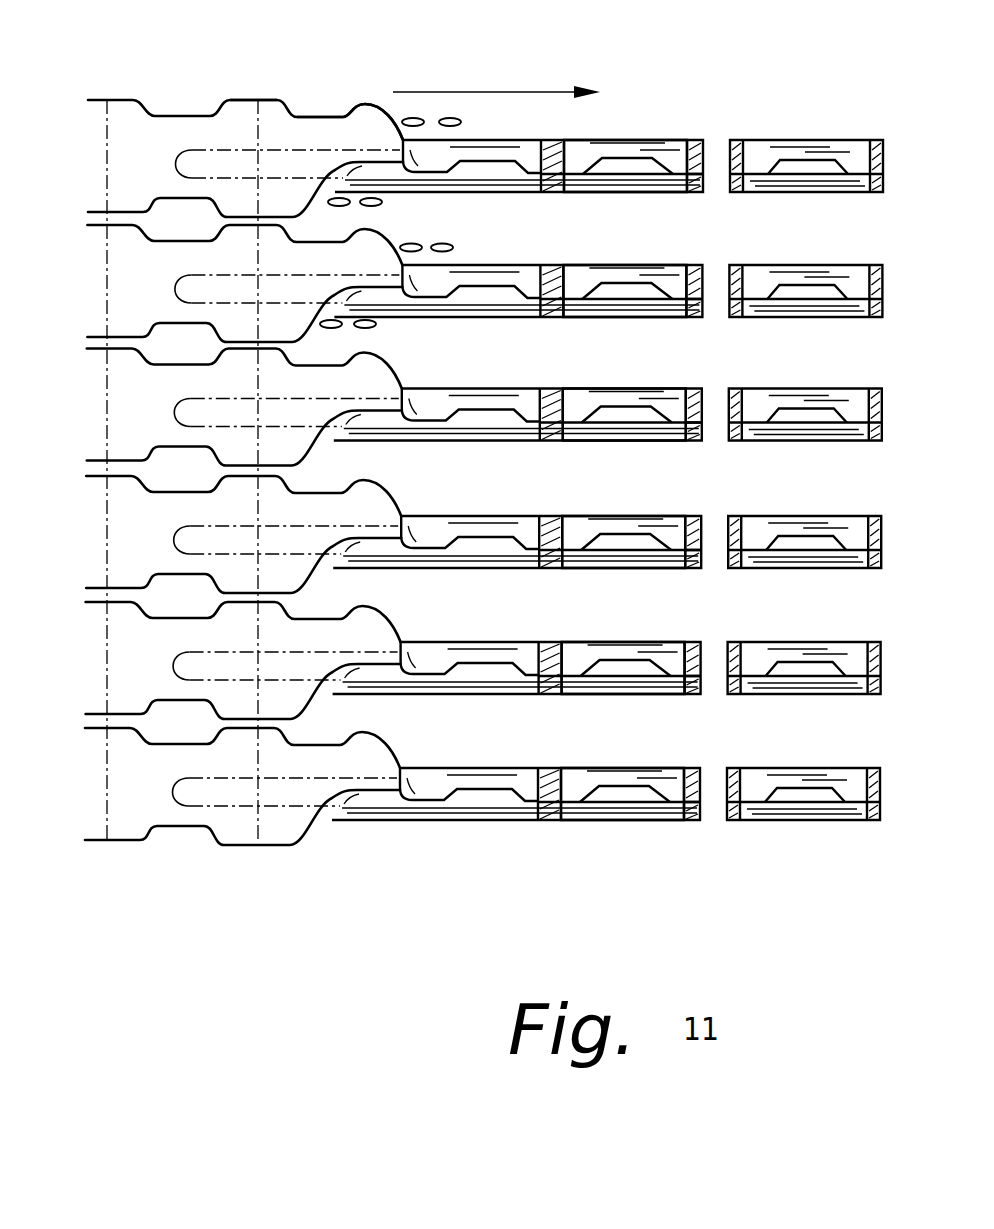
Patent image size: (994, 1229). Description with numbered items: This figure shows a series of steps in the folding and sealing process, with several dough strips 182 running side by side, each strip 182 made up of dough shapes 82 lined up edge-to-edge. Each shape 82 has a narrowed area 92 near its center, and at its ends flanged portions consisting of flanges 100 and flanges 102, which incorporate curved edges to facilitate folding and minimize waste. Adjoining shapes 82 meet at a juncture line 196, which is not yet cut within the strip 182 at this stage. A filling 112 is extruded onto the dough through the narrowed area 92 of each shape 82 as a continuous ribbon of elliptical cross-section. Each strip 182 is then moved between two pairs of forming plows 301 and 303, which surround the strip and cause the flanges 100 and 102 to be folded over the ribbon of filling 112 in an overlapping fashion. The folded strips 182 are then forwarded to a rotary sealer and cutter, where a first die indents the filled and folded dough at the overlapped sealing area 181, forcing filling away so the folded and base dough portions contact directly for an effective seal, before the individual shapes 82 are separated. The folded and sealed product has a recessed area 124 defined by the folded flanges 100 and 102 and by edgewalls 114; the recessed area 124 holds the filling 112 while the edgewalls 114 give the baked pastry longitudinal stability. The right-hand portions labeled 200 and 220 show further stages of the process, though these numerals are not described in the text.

The shape 82 is at (114, 118).
The narrowed area 92 is at (230, 127).
The flange 100 is at (243, 107).
The flange 102 is at (306, 105).
The juncture line 196 is at (296, 112).
The filling 112 is at (183, 150).
The edgewall 114 is at (508, 140).
The strip 182 is at (66, 170).
The package compartment 200 is at (563, 141).
The recessed area 124 is at (650, 166).
The singulated package 220 is at (743, 140).
The overlapped sealing area 181 is at (548, 184).
The forming plow 303 is at (450, 118).
The forming plow 301 is at (372, 205).